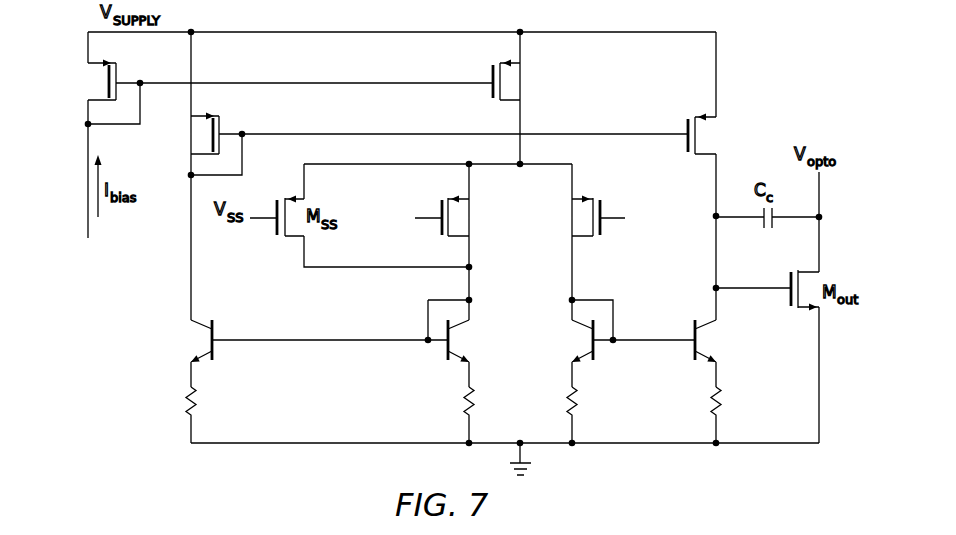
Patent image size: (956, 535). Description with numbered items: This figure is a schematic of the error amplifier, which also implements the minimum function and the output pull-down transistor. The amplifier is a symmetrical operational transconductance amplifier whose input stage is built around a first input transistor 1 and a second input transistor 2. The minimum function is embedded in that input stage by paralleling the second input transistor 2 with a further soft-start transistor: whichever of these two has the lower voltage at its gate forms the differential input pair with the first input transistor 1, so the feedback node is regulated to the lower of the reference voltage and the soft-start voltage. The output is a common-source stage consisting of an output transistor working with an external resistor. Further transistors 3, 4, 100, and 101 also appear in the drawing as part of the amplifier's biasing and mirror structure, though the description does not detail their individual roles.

The transistor M100 100 is at (266, 80).
The transistor M101 101 is at (528, 99).
The transistor M1 1 is at (618, 303).
The transistor M2 2 is at (432, 302).
The transistor M3 / Q3 / resistor R3 3 is at (717, 279).
The transistor M4 / Q4 / resistor R4 4 is at (425, 237).